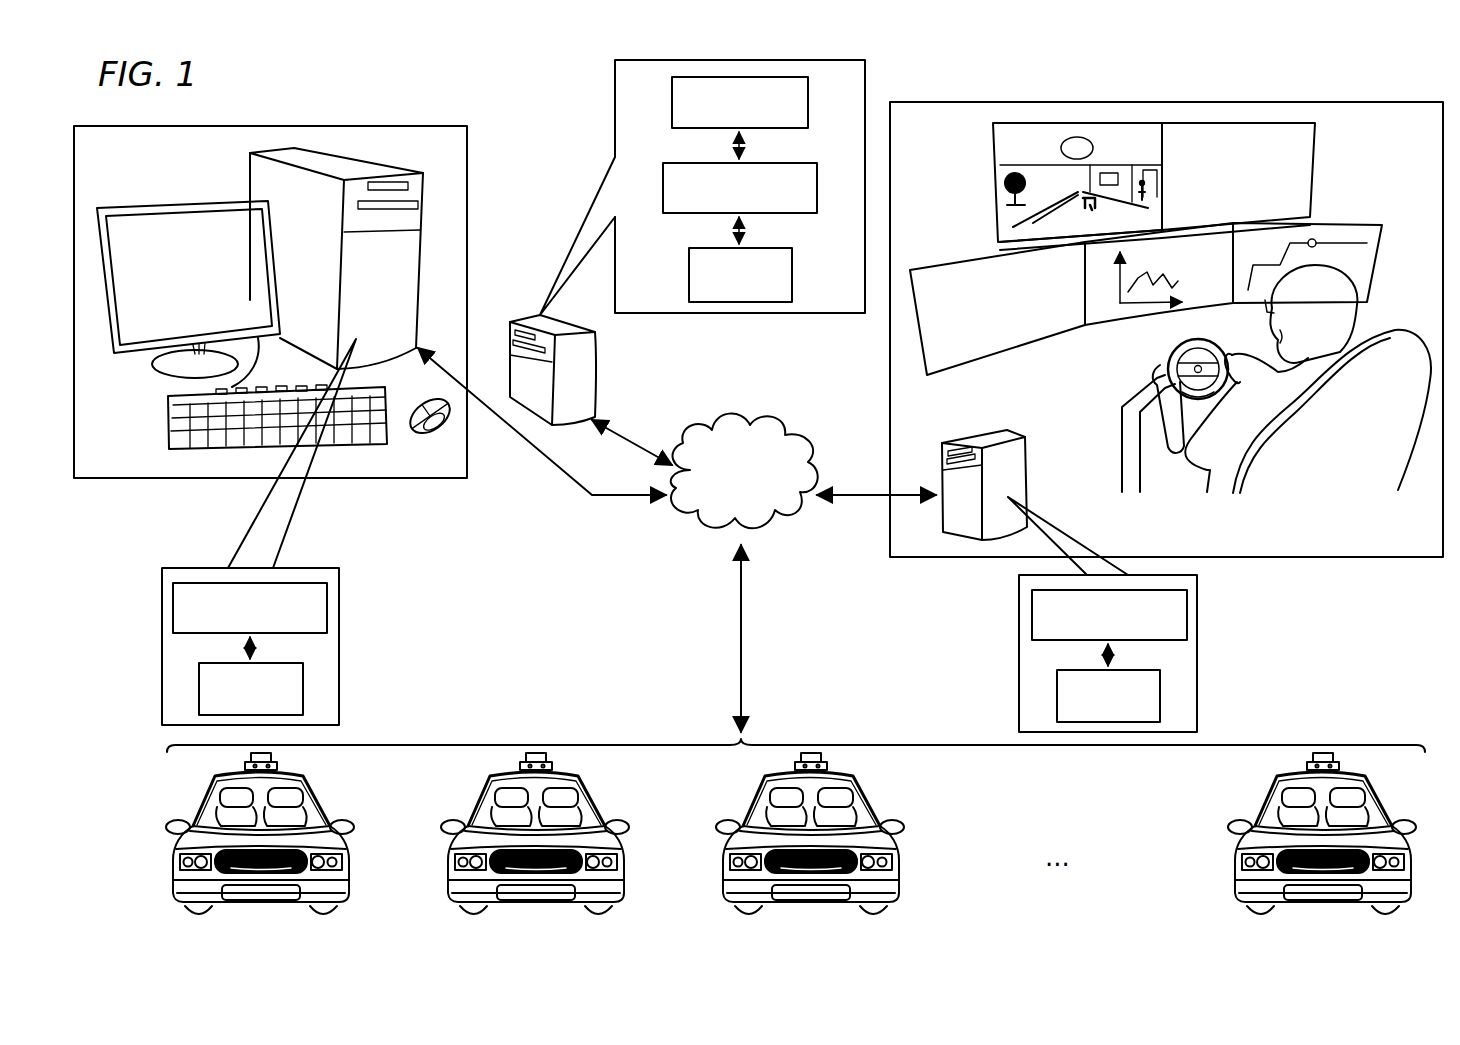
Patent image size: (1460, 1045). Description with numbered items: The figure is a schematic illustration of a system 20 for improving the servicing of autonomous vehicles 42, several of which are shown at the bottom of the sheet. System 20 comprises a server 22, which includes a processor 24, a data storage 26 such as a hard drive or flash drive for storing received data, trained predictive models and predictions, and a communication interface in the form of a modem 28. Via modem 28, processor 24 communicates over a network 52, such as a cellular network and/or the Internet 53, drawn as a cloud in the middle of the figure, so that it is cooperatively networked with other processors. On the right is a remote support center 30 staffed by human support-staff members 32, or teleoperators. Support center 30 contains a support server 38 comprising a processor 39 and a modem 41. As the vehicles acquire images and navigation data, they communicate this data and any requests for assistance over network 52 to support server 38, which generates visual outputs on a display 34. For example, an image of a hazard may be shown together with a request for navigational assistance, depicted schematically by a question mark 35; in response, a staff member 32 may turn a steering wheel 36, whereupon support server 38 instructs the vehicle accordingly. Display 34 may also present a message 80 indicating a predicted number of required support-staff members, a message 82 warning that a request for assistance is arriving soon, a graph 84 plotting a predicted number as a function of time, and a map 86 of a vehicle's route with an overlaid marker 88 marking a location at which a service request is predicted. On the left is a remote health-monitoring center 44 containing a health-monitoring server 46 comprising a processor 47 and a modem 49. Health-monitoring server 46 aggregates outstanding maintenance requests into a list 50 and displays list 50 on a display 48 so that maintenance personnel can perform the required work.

The system 20 is at (575, 327).
The server 22 is at (597, 375).
The processor 24 is at (663, 190).
The data storage 26 is at (672, 108).
The modem 28 is at (792, 275).
The remote support center 30 is at (1350, 557).
The support-staff member 32 is at (1310, 338).
The display 34 is at (1166, 243).
The question mark 35 is at (1064, 137).
The steering wheel 36 is at (1166, 350).
The support server 38 is at (968, 540).
The processor 39 is at (1187, 612).
The modem 41 is at (1160, 692).
The autonomous vehicle 42 is at (1268, 777).
The remote health-monitoring center 44 is at (443, 126).
The health-monitoring server 46 is at (329, 149).
The processor 47 is at (327, 604).
The display 48 is at (173, 204).
The modem 49 is at (303, 684).
The list 50 is at (216, 217).
The network 52 is at (744, 471).
The Internet 53 is at (744, 471).
The message 80 is at (1295, 138).
The message 82 is at (962, 352).
The graph 84 is at (1103, 310).
The map 86 is at (1328, 224).
The marker 88 is at (1312, 239).